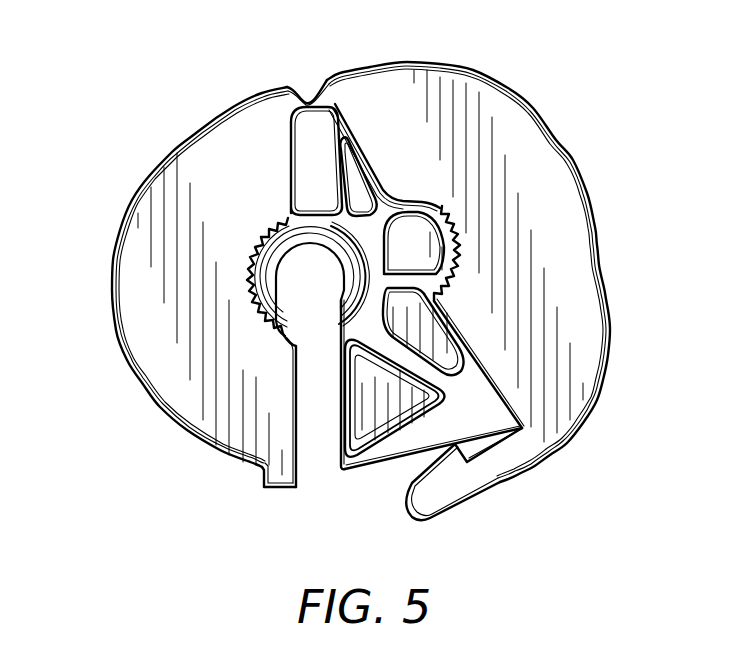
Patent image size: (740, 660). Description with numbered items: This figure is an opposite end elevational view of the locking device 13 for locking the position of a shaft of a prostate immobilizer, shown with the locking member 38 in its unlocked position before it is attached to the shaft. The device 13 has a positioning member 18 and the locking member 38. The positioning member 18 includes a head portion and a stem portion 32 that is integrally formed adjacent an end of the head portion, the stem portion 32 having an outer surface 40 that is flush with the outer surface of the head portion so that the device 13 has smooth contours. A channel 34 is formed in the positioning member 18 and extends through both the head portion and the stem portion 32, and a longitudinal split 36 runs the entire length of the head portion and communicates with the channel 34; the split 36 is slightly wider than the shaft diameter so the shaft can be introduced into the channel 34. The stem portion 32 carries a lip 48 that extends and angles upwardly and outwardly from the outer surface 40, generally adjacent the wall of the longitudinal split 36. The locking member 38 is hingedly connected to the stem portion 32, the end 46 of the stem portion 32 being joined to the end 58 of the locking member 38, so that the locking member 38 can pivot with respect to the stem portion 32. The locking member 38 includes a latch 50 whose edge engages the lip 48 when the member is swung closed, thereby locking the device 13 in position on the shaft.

The locking device 13 is at (513, 70).
The positioning member 18 is at (352, 463).
The stem portion 32 is at (145, 208).
The channel 34 is at (293, 263).
The longitudinal split 36 is at (317, 390).
The locking member 38 is at (562, 190).
The outer surface 40 is at (157, 358).
The end of the stem portion 46 is at (273, 103).
The lip 48 is at (273, 486).
The latch 50 is at (433, 498).
The end of the locking member 58 is at (347, 80).